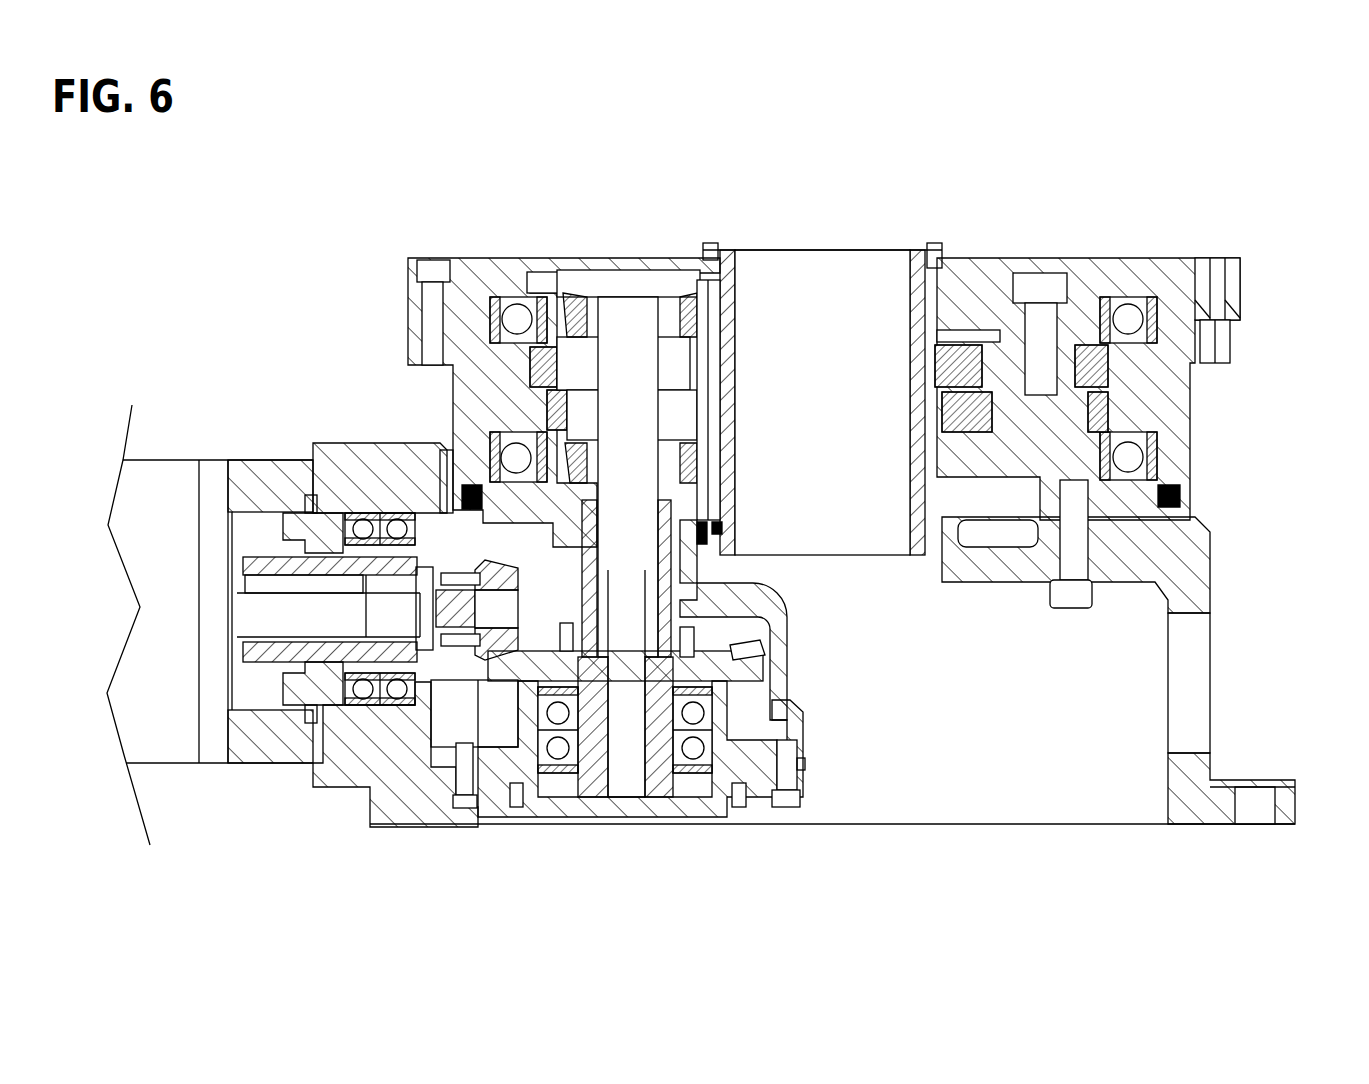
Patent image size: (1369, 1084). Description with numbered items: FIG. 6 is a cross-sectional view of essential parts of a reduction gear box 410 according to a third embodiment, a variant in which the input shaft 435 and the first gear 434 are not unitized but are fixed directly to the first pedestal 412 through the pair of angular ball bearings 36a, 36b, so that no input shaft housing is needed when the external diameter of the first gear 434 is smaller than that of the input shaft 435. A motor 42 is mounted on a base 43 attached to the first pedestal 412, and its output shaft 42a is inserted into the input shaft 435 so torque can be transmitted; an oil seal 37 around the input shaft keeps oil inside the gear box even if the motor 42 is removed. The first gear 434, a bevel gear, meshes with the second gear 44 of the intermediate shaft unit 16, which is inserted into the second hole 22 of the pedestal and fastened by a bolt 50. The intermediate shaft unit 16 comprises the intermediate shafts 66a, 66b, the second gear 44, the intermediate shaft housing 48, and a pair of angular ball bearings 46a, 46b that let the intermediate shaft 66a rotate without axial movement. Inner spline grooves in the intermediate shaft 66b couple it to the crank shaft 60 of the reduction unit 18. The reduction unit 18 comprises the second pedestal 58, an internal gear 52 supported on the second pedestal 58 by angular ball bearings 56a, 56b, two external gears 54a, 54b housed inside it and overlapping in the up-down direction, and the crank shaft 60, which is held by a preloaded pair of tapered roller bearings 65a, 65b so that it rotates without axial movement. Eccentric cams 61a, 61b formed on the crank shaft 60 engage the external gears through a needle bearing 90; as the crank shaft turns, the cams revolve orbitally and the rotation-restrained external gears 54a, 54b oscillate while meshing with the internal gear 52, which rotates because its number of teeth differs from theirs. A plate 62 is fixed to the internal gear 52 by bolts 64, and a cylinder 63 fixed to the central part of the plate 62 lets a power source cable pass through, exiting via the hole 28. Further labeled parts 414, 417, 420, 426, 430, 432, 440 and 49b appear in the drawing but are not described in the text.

The intermediate shaft unit 16 is at (600, 836).
The reduction unit 18 is at (1255, 282).
The second hole 22 is at (757, 627).
The hole 28 is at (903, 570).
The angular ball bearing 36a is at (360, 690).
The angular ball bearing 36b is at (398, 696).
The oil seal 37 is at (243, 545).
The motor 42 is at (152, 472).
The output shaft 42a is at (233, 617).
The base 43 is at (245, 480).
The second gear 44 is at (790, 670).
The angular ball bearing 46a is at (778, 715).
The angular ball bearing 46b is at (695, 752).
The intermediate shaft housing 48 is at (752, 765).
The spacer 49b is at (806, 765).
The bolt 50 is at (800, 797).
The internal gear 52 is at (467, 378).
The external gear 54a is at (418, 312).
The external gear 54b is at (418, 328).
The angular ball bearing 56a is at (517, 318).
The angular ball bearing 56b is at (516, 456).
The second pedestal 58 is at (1013, 355).
The crank shaft 60 is at (620, 310).
The eccentric cam 61a is at (650, 360).
The eccentric cam 61b is at (652, 405).
The plate 62 is at (1178, 285).
The cylinder 63 is at (742, 330).
The bolt 64 is at (437, 265).
The tapered roller bearing 65a is at (575, 298).
The tapered roller bearing 65b is at (690, 462).
The intermediate shaft 66a is at (640, 812).
The intermediate shaft 66b is at (702, 562).
The needle bearing 90 is at (680, 350).
The reduction gear box 410 is at (1237, 180).
The first pedestal 412 is at (335, 478).
The coupling portion 414 is at (262, 410).
The support portion 417 is at (1242, 634).
The ring 420 is at (455, 512).
The leg 426 is at (1195, 666).
The seal 430 is at (1168, 492).
The foot 432 is at (1198, 826).
The first gear 434 is at (517, 578).
The input shaft 435 is at (253, 660).
The collar 440 is at (305, 496).